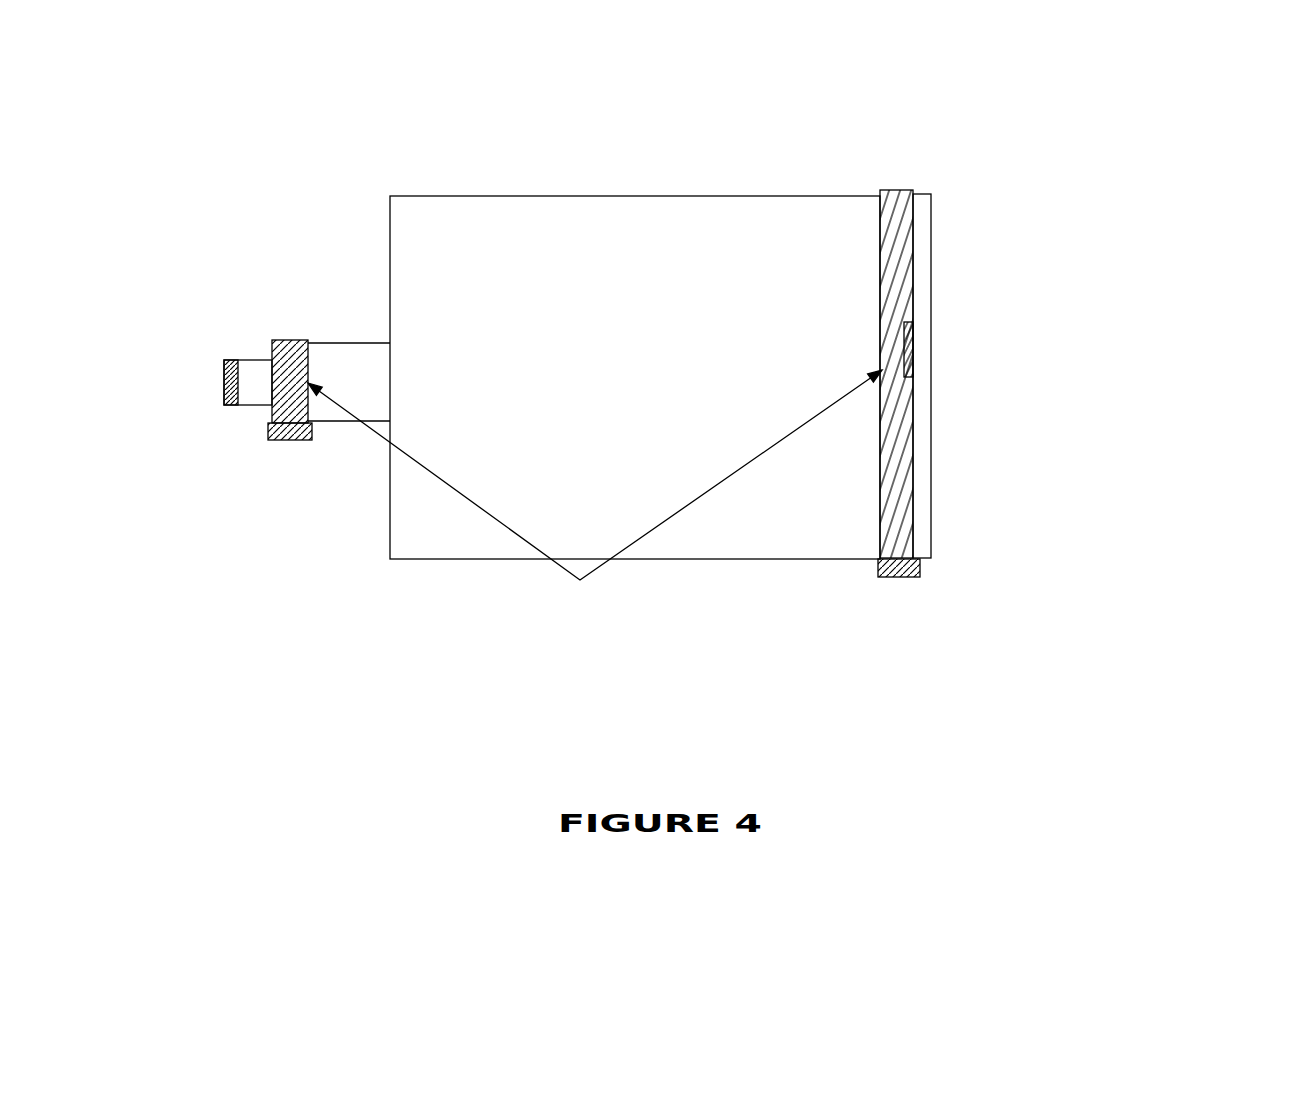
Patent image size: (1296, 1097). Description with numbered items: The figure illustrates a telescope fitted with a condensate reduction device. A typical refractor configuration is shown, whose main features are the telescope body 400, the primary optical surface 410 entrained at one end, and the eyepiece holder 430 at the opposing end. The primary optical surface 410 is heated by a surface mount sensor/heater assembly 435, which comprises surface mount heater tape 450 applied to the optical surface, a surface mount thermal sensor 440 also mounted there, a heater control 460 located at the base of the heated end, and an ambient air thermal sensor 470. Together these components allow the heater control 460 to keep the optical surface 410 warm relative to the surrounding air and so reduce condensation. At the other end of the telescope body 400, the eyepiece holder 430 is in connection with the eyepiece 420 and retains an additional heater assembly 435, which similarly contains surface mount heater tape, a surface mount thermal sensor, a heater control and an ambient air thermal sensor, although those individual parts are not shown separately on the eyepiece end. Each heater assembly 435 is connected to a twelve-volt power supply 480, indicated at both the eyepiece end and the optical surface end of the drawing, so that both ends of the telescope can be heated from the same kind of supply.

The telescope body 400 is at (648, 196).
The optical surface 410 is at (931, 237).
The eyepiece 420 is at (232, 359).
The eyepiece holder 430 is at (338, 343).
The surface mount sensor/heater assembly 435 is at (595, 530).
The surface mount thermal sensor 440 is at (913, 363).
The surface mount heater tape 450 is at (931, 503).
The heater control 460 is at (920, 564).
The ambient air thermal sensor 470 is at (900, 577).
The 12-volt power supply 480 is at (312, 432).